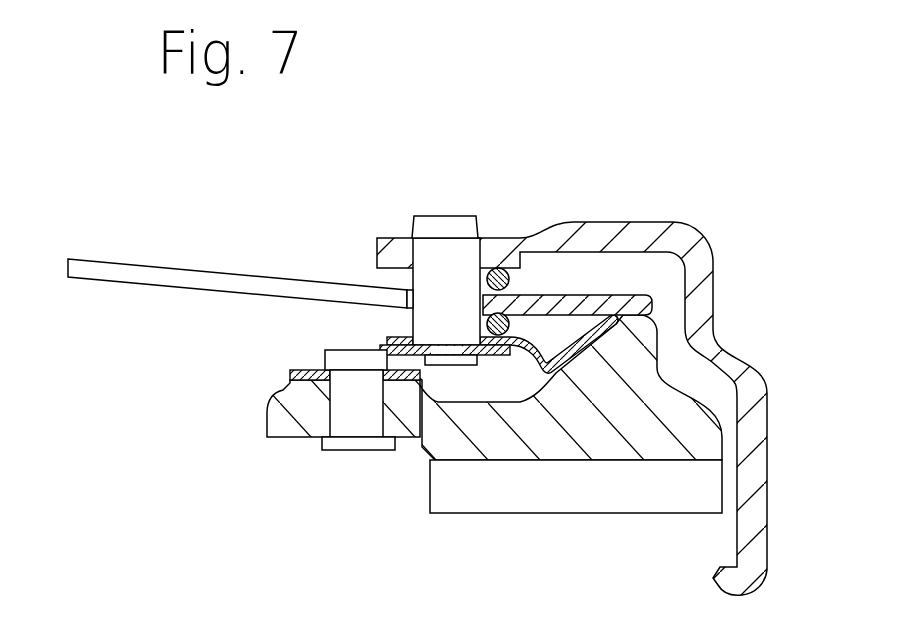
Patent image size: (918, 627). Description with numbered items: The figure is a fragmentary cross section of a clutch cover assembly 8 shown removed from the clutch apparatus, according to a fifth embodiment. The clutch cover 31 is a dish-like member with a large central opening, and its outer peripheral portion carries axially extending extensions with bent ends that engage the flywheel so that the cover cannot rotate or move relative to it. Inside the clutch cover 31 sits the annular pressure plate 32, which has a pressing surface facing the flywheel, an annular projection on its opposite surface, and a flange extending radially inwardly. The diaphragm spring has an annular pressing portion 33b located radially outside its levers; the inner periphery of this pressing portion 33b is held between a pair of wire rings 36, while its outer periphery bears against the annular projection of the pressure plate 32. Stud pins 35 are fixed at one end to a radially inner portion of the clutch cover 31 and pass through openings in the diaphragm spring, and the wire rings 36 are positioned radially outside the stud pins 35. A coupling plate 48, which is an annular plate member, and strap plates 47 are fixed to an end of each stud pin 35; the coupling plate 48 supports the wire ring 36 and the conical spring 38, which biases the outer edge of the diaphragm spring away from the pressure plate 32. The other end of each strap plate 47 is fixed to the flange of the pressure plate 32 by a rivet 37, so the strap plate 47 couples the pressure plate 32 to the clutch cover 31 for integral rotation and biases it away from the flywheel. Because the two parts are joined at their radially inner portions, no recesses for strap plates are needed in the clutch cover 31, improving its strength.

The clutch cover assembly 8 is at (631, 164).
The clutch cover 31 is at (745, 378).
The pressure plate 32 is at (586, 435).
The annular pressing portion 33b is at (567, 298).
The stud pin 35 is at (448, 280).
The wire ring 36 is at (501, 325).
The rivet 37 is at (358, 408).
The conical spring 38 is at (620, 300).
The strap plate 47 is at (299, 350).
The coupling plate 48 is at (550, 368).